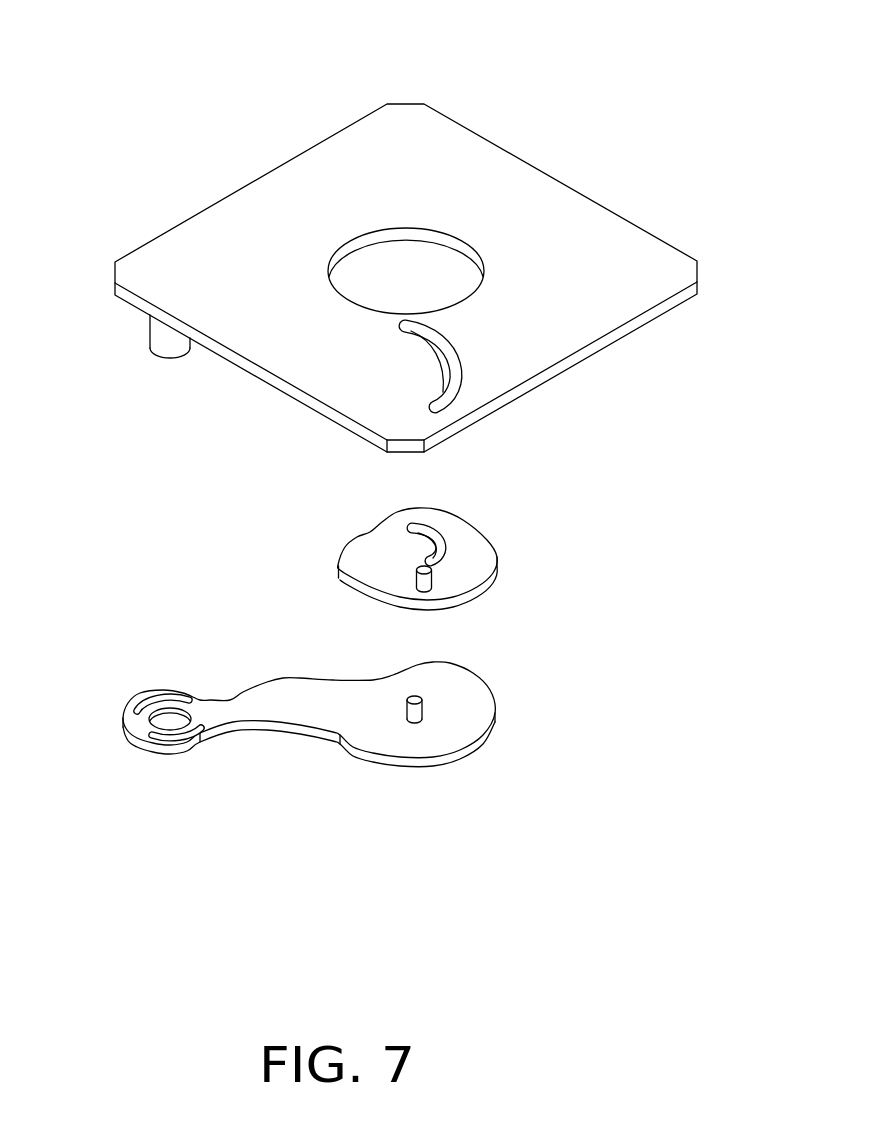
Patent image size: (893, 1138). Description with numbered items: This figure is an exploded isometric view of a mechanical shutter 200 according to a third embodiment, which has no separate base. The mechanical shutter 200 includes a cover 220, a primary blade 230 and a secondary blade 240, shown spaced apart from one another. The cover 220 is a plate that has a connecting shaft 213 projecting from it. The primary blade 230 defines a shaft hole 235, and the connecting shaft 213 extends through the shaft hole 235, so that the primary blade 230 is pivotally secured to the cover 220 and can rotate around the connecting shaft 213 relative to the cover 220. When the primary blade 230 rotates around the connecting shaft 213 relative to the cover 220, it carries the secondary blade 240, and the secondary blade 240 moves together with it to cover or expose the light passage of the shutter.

The mechanical shutter 200 is at (200, 58).
The cover 220 is at (583, 244).
The connecting shaft 213 is at (172, 338).
The secondary blade 240 is at (460, 543).
The primary blade 230 is at (341, 731).
The shaft hole 235 is at (168, 719).